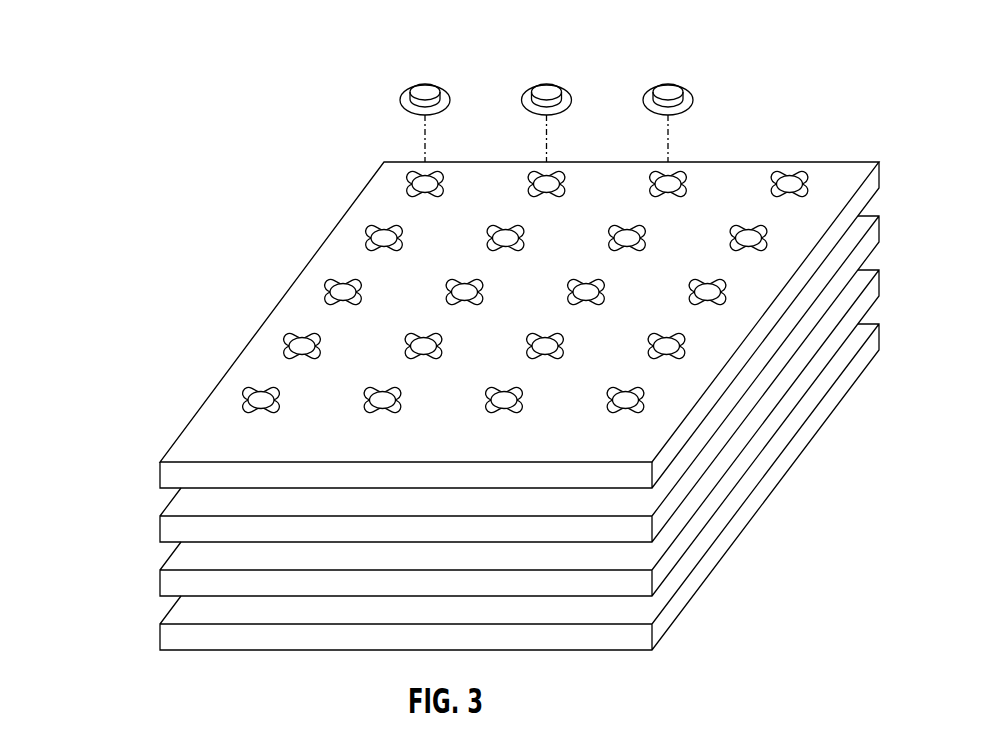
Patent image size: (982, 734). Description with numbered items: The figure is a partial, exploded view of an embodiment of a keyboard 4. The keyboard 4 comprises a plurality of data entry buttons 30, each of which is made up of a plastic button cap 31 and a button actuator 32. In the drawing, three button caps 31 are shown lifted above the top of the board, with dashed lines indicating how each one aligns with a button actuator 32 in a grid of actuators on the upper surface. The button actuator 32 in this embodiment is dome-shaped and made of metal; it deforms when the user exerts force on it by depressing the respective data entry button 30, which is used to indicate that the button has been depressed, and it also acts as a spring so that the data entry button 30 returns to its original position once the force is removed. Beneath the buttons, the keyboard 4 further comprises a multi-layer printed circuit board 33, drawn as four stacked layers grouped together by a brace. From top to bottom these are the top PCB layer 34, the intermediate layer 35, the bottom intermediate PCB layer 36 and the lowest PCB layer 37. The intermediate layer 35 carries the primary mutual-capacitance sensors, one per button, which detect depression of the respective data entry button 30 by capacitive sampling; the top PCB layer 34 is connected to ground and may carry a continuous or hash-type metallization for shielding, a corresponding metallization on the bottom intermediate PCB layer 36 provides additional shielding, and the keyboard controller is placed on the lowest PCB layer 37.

The keyboard 4 is at (463, 393).
The data entry button 30 is at (550, 91).
The button cap 31 is at (427, 92).
The button actuator 32 is at (408, 184).
The multi-layer printed circuit board 33 is at (463, 393).
The top PCB layer 34 is at (493, 311).
The intermediate PCB layer 35 is at (172, 532).
The bottom intermediate PCB layer 36 is at (172, 586).
The lowest PCB layer 37 is at (100, 459).